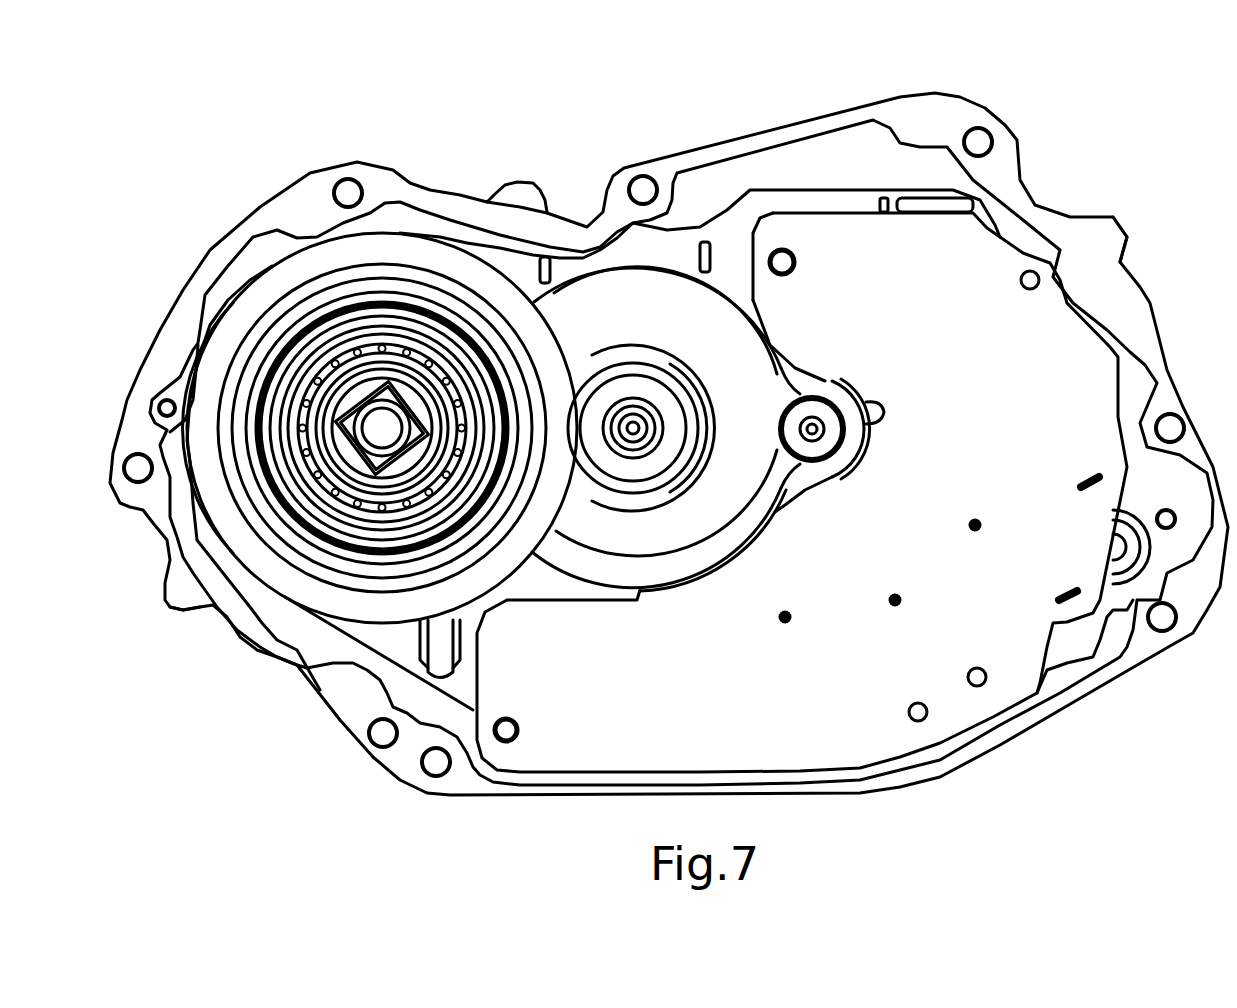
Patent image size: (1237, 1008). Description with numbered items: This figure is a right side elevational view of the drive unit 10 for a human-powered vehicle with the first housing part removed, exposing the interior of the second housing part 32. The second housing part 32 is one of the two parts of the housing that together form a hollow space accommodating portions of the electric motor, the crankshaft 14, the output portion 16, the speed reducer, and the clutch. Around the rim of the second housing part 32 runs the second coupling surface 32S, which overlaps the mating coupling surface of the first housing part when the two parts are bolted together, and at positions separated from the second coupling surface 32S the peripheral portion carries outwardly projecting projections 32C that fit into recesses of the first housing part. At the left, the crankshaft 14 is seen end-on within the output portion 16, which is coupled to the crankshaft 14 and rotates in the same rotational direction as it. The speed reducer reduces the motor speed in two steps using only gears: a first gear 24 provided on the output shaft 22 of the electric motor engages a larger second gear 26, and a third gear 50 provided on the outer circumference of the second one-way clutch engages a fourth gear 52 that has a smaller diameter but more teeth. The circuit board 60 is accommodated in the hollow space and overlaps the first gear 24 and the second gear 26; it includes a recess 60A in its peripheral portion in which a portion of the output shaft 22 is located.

The drive unit 10 is at (1100, 92).
The crankshaft 14 is at (372, 472).
The output portion 16 is at (305, 465).
The output shaft 22 is at (822, 460).
The first gear 24 is at (821, 396).
The second gear 26 is at (755, 345).
The second housing part 32 is at (935, 114).
The projections 32C is at (522, 184).
The second coupling surface 32S is at (907, 120).
The third gear 50 is at (512, 568).
The fourth gear 52 is at (603, 375).
The circuit board 60 is at (802, 757).
The recess 60A is at (872, 414).